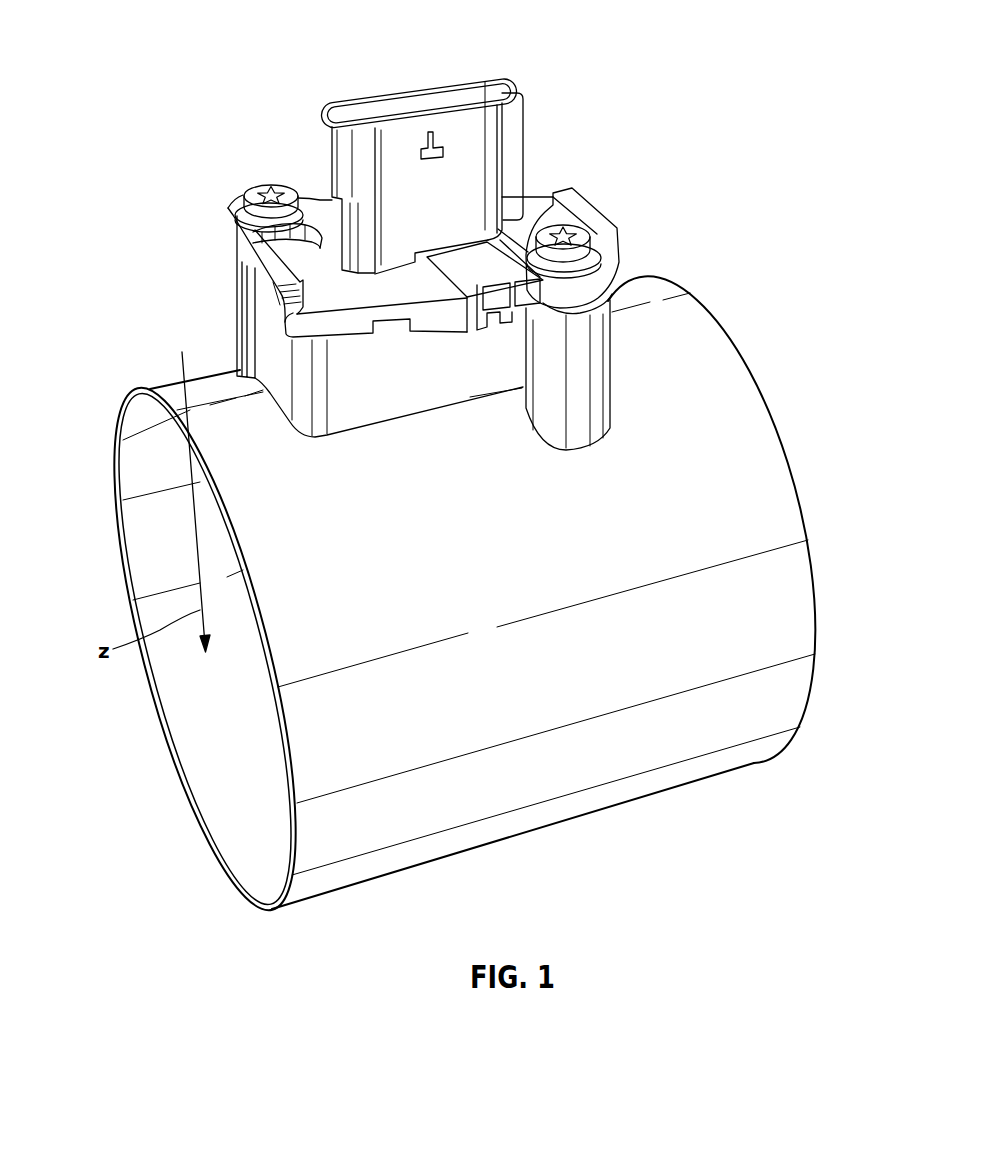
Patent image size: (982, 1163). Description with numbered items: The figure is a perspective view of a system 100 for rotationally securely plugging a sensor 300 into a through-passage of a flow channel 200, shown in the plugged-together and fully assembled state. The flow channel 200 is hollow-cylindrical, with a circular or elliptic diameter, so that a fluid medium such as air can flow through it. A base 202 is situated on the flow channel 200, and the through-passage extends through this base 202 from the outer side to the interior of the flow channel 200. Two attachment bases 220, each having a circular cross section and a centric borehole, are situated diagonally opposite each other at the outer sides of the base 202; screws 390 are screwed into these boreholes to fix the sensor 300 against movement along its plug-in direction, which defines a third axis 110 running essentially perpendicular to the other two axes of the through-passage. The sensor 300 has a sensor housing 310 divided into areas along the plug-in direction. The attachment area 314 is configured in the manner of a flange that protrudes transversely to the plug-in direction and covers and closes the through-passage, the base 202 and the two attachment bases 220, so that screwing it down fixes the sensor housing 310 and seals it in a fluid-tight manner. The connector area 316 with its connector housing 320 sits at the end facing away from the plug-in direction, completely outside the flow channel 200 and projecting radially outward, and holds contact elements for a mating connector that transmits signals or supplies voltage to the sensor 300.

The system 100 is at (200, 117).
The third axis 110 is at (197, 533).
The flow channel 200 is at (710, 397).
The base 202 is at (267, 337).
The attachment base 220 is at (580, 355).
The sensor 300 is at (545, 108).
The sensor housing 310 is at (312, 128).
The attachment area 314 is at (643, 260).
The connector area 316 is at (523, 152).
The connector housing 320 is at (462, 66).
The screw 390 is at (258, 188).